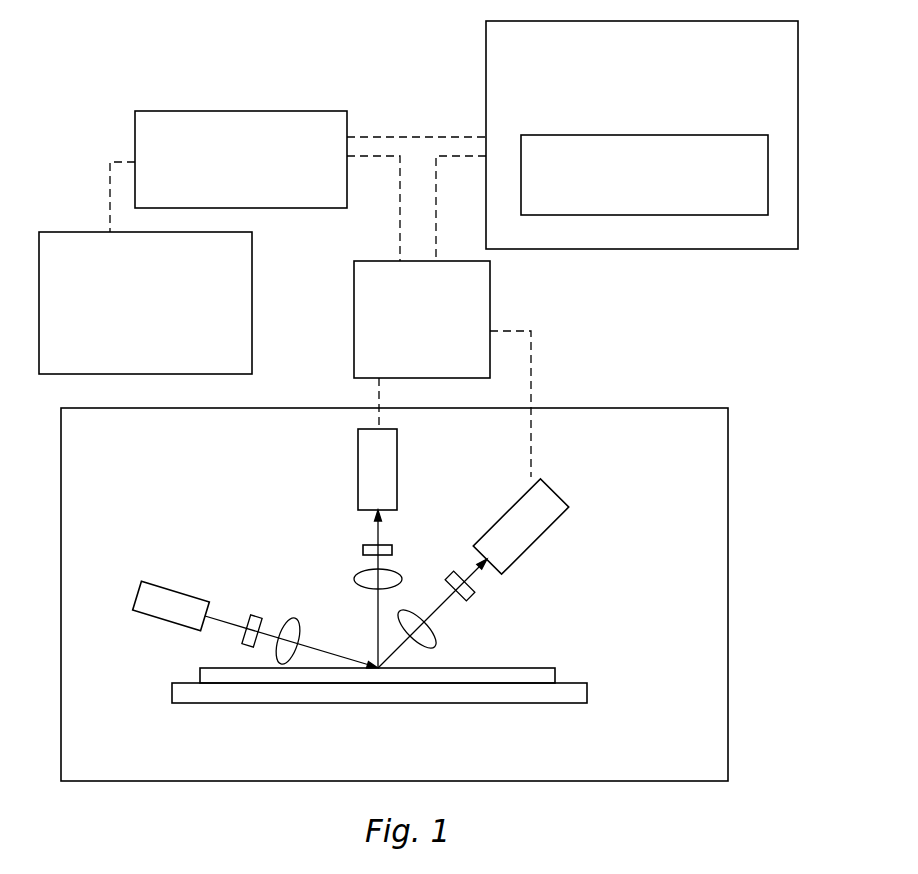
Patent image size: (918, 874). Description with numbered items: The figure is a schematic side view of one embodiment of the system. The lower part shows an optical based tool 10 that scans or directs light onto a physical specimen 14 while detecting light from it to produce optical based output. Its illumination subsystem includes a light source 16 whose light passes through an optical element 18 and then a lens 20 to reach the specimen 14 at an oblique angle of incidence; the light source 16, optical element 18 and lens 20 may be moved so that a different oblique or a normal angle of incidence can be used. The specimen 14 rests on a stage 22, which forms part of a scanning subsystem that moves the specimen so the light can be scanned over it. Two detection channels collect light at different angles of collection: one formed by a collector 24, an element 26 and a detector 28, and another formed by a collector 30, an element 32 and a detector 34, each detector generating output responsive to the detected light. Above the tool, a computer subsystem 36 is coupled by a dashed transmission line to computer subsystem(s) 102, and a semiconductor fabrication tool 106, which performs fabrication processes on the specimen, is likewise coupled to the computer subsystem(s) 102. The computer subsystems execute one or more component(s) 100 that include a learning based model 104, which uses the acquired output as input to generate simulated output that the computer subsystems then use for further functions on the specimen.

The optical based tool 10 is at (700, 408).
The specimen 14 is at (213, 668).
The light source 16 is at (142, 590).
The optical element 18 is at (258, 617).
The lens 20 is at (293, 620).
The stage 22 is at (173, 697).
The collector 24 is at (358, 578).
The element 26 is at (363, 547).
The detector 28 is at (357, 470).
The collector 30 is at (434, 648).
The element 32 is at (470, 599).
The detector 34 is at (553, 528).
The computer subsystem 36 is at (435, 360).
The component(s) 100 is at (662, 110).
The computer subsystem(s) 102 is at (260, 199).
The learning based model 104 is at (700, 200).
The semiconductor fabrication tool 106 is at (166, 342).